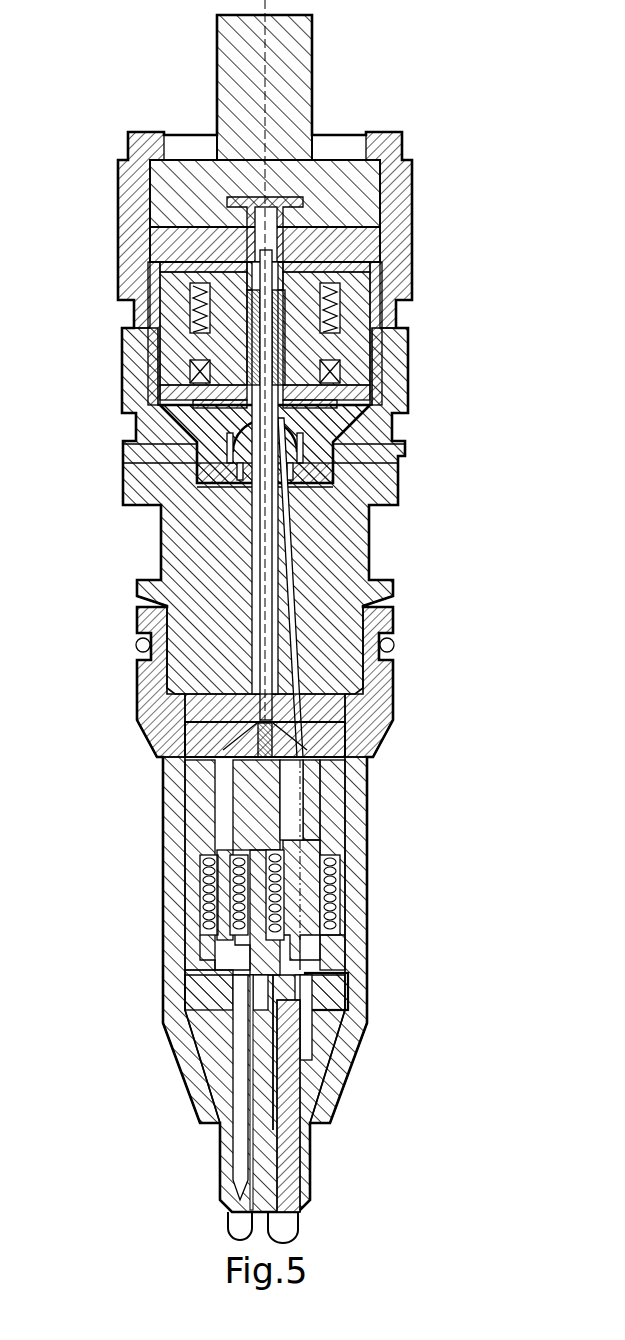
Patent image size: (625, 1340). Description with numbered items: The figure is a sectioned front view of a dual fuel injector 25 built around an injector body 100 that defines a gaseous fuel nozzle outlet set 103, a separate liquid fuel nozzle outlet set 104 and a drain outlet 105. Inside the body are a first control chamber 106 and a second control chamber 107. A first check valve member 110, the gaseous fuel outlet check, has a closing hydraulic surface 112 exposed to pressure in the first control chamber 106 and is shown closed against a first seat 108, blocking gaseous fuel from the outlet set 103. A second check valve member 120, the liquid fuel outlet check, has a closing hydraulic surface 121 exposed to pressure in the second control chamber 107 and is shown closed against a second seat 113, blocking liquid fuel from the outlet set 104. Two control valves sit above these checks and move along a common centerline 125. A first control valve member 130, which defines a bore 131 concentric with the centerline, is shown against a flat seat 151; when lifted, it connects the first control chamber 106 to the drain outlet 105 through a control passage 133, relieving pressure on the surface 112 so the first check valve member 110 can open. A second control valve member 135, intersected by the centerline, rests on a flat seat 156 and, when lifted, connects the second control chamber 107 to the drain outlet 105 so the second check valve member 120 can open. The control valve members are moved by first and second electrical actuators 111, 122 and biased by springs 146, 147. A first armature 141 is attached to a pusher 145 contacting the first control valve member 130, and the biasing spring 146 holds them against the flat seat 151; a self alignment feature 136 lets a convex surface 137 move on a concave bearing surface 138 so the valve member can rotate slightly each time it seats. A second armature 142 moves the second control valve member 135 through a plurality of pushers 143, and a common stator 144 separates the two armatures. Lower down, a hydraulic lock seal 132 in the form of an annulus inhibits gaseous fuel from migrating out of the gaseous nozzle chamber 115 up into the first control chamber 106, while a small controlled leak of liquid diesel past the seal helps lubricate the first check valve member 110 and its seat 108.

The fuel injector 25 is at (91, 146).
The injector body 100 is at (120, 345).
The gaseous fuel nozzle outlet set 103 is at (303, 1230).
The liquid fuel nozzle outlet set 104 is at (235, 1228).
The drain outlet 105 is at (400, 462).
The first control chamber 106 is at (330, 800).
The second control chamber 107 is at (186, 786).
The first seat 108 is at (273, 1205).
The first check valve member 110 is at (340, 848).
The first electrical actuator 111 is at (170, 374).
The closing hydraulic surface 112 is at (330, 772).
The second seat 113 is at (233, 1203).
The gaseous nozzle chamber 115 is at (322, 966).
The second check valve member 120 is at (210, 820).
The closing hydraulic surface 121 is at (188, 746).
The second electrical actuator 122 is at (170, 322).
The common centerline 125 is at (266, 66).
The first control valve member 130 is at (300, 380).
The bore 131 is at (229, 380).
The hydraulic lock seal 132 is at (308, 842).
The control passage 133 is at (300, 592).
The second control valve member 135 is at (262, 720).
The self alignment feature 136 is at (208, 417).
The convex surface 137 is at (338, 422).
The concave bearing surface 138 is at (232, 448).
The first armature 141 is at (352, 362).
The second armature 142 is at (154, 264).
The pushers 143 is at (282, 322).
The common stator 144 is at (367, 292).
The pusher 145 is at (318, 397).
The biasing spring 146 is at (163, 284).
The spring 147 is at (350, 720).
The flat seat 151 is at (388, 450).
The flat seat 156 is at (340, 745).